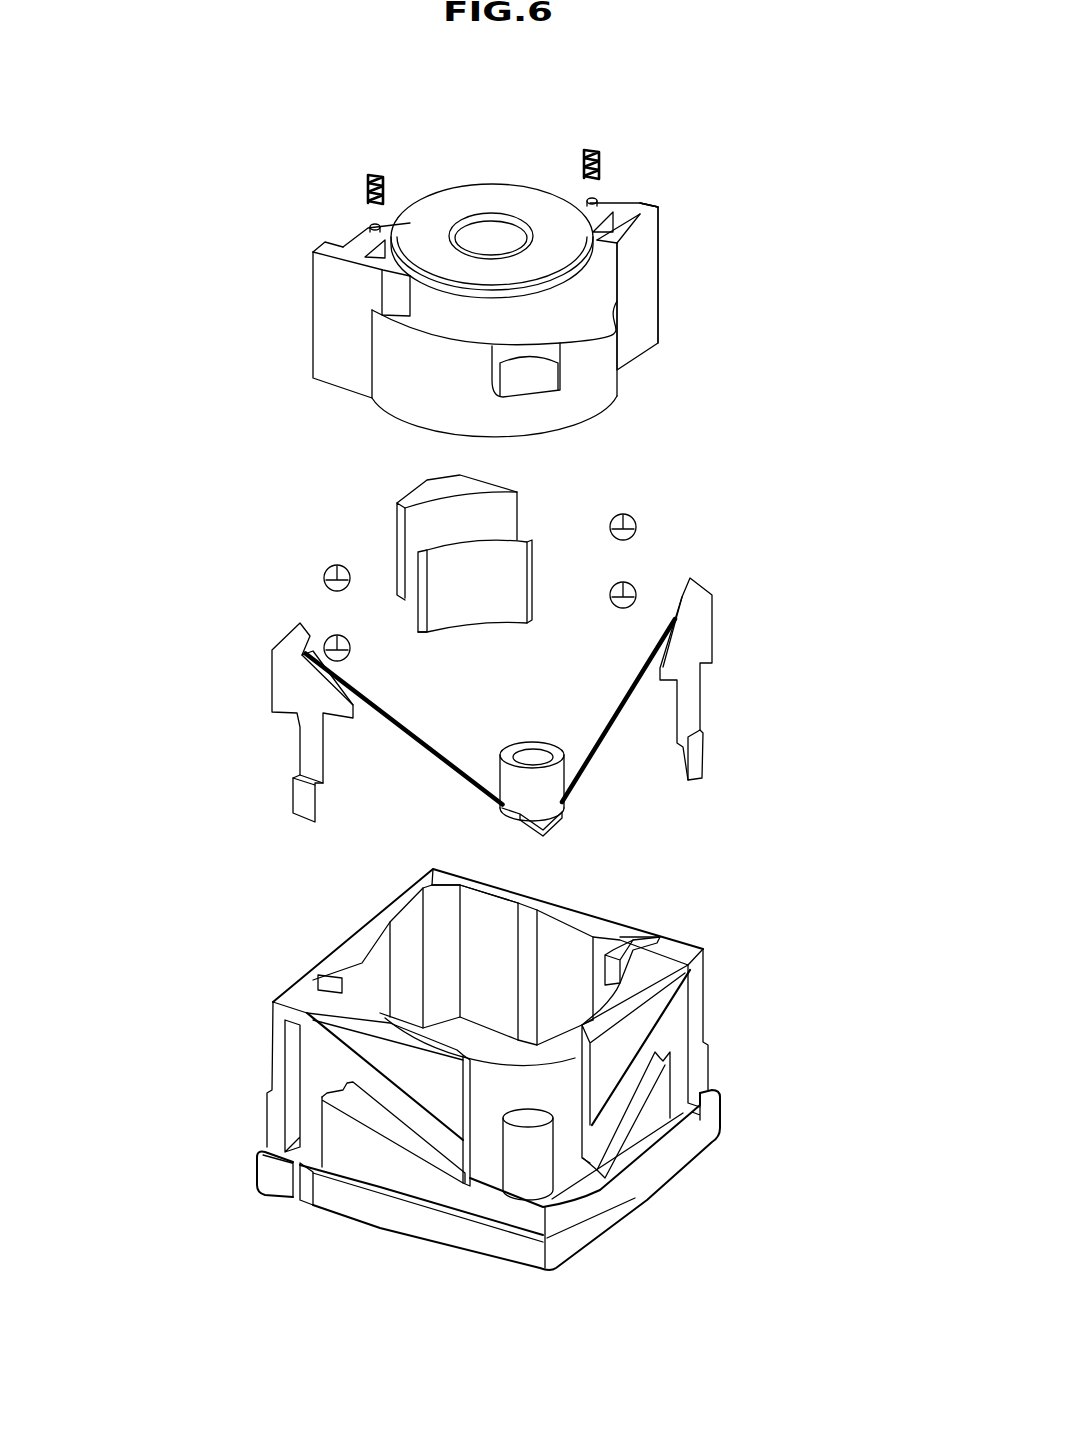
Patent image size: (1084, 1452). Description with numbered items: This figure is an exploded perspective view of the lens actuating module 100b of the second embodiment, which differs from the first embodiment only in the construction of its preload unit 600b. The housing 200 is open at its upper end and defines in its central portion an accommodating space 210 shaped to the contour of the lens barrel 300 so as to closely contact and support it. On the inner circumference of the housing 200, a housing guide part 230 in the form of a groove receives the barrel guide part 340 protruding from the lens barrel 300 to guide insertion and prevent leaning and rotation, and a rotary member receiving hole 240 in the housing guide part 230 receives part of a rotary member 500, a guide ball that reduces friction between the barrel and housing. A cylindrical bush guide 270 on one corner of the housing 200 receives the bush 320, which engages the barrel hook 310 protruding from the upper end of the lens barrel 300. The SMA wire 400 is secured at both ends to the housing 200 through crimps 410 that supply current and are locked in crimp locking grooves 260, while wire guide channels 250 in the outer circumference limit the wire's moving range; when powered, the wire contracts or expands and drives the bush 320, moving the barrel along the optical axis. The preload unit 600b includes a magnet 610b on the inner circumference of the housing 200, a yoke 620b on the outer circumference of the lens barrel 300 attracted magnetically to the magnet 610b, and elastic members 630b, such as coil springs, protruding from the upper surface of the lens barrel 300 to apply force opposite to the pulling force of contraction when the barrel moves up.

The lens actuating module 100b is at (365, 89).
The housing 200 is at (275, 974).
The accommodating space 210 is at (513, 995).
The housing guide part 230 is at (640, 931).
The rotary member receiving hole 240 is at (612, 950).
The wire guide channel 250 is at (388, 1113).
The crimp locking groove 260 is at (312, 1117).
The bush guide 270 is at (530, 1182).
The lens barrel 300 is at (340, 218).
The barrel hook 310 is at (545, 370).
The bush 320 is at (520, 748).
The barrel guide part 340 is at (643, 210).
The SMA wire 400 is at (615, 712).
The crimp 410 is at (698, 637).
The rotary member 500 is at (340, 565).
The preload unit 600b is at (747, 455).
The magnet 610b is at (497, 508).
The yoke 620b is at (510, 578).
The elastic member 630b is at (590, 148).